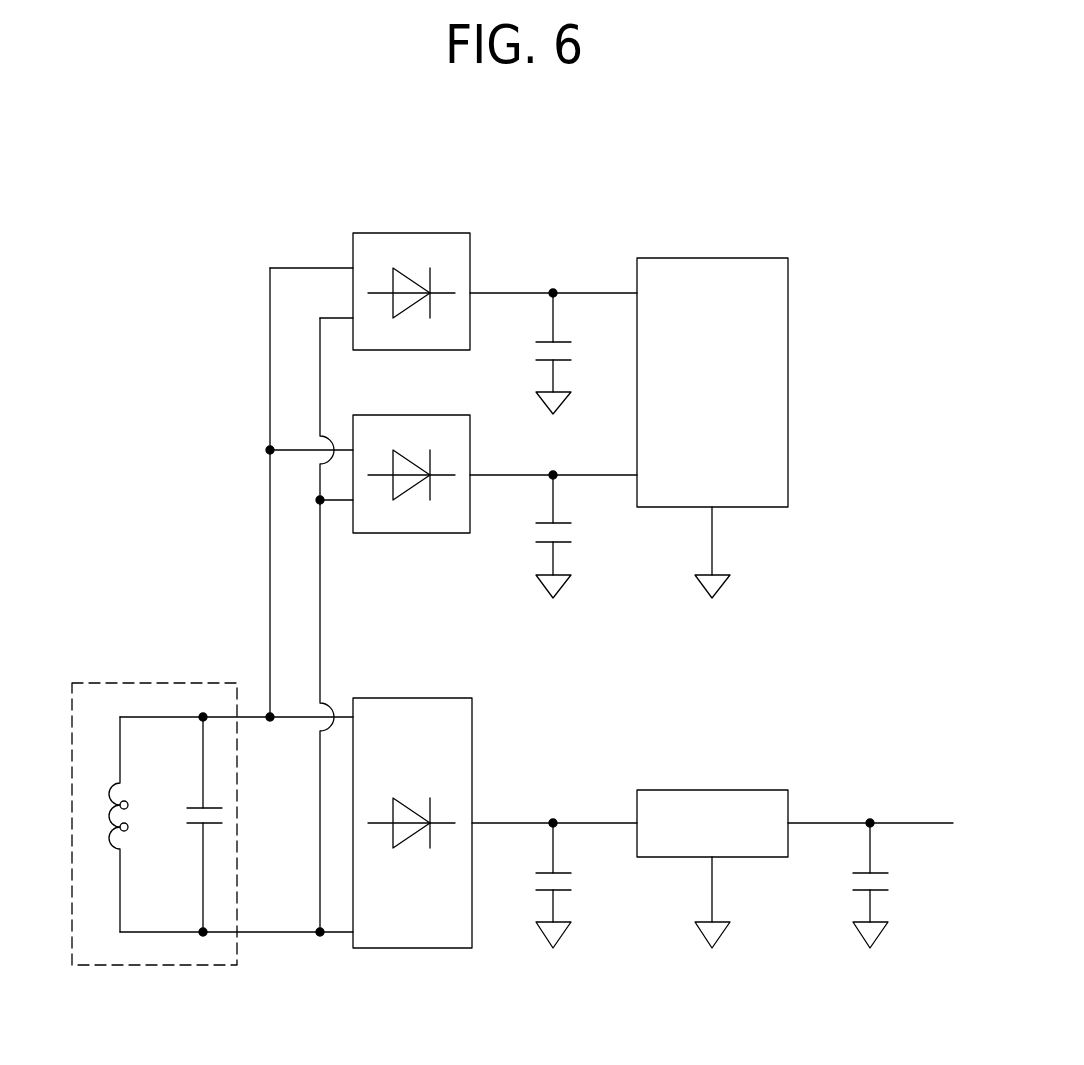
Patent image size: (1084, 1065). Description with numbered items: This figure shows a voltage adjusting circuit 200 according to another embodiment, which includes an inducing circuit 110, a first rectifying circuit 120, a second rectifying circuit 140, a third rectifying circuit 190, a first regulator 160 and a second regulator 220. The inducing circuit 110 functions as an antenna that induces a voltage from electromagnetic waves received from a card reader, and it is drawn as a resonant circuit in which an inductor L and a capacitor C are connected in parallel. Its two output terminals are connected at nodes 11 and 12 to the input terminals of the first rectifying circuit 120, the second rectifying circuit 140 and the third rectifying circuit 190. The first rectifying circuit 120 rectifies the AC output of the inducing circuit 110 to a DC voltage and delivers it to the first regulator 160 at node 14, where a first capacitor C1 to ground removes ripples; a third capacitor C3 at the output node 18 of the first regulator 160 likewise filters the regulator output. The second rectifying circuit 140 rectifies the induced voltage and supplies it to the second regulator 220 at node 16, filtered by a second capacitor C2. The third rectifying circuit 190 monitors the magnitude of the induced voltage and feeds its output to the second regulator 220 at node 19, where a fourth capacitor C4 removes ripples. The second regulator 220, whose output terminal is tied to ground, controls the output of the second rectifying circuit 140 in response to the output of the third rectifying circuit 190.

The voltage adjusting circuit 200 is at (905, 158).
The inducing circuit 110 is at (154, 800).
The node 11 is at (270, 722).
The node 12 is at (316, 935).
The first rectifying circuit 120 is at (413, 698).
The second rectifying circuit 140 is at (410, 533).
The third rectifying circuit 190 is at (413, 233).
The node 14 is at (557, 820).
The node 16 is at (557, 472).
The node 18 is at (874, 820).
The node 19 is at (557, 290).
The first regulator 160 is at (713, 790).
The second regulator 220 is at (713, 258).
The inductor L is at (107, 824).
The capacitor C is at (192, 824).
The first capacitor C1 is at (572, 885).
The second capacitor C2 is at (572, 536).
The third capacitor C3 is at (889, 885).
The fourth capacitor C4 is at (572, 353).